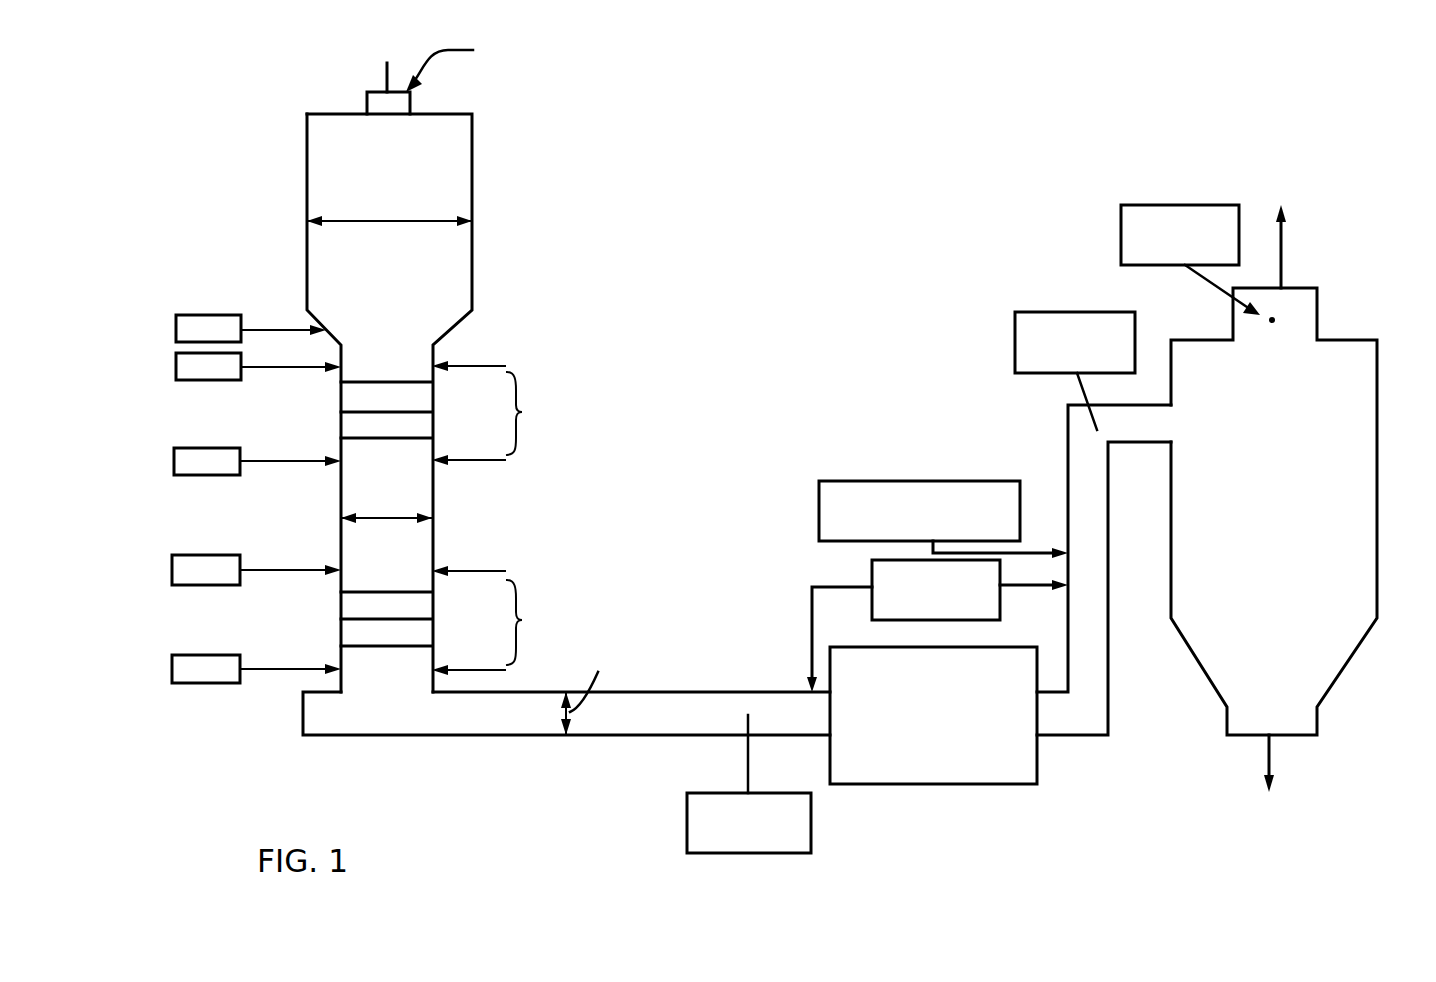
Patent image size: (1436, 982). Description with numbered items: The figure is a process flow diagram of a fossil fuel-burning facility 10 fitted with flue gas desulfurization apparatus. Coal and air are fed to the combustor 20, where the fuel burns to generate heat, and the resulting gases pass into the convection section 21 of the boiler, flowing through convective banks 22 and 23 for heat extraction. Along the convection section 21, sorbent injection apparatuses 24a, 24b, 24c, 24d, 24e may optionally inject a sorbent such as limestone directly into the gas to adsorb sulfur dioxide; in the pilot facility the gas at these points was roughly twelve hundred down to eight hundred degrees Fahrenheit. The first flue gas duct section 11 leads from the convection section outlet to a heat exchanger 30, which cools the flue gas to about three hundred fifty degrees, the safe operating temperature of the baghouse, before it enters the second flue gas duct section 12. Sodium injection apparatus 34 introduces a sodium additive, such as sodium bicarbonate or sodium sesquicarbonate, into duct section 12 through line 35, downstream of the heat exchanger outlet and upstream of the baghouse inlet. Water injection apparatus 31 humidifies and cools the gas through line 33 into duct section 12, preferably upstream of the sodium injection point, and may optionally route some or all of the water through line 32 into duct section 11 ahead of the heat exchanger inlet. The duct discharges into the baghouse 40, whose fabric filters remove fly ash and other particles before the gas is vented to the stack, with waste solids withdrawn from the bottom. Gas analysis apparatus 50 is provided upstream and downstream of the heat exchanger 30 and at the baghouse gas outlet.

The fossil fuel-burning facility 10 is at (618, 192).
The first flue gas duct section 11 is at (530, 735).
The second flue gas duct section 12 is at (1108, 660).
The combustor 20 is at (475, 182).
The convection section 21 is at (341, 492).
The convective bank 22 is at (450, 413).
The convective bank 23 is at (448, 620).
The sorbent injection apparatus 24a is at (190, 315).
The sorbent injection apparatus 24b is at (204, 380).
The sorbent injection apparatus 24c is at (200, 475).
The sorbent injection apparatus 24d is at (200, 585).
The sorbent injection apparatus 24e is at (200, 683).
The heat exchanger 30 is at (905, 786).
The water injection apparatus 31 is at (872, 572).
The water injection line 32 is at (812, 621).
The water injection line 33 is at (1040, 588).
The sodium injection apparatus 34 is at (920, 481).
The sodium additive injection line 35 is at (930, 553).
The baghouse 40 is at (1377, 447).
The gas analysis apparatus 50 is at (687, 812).